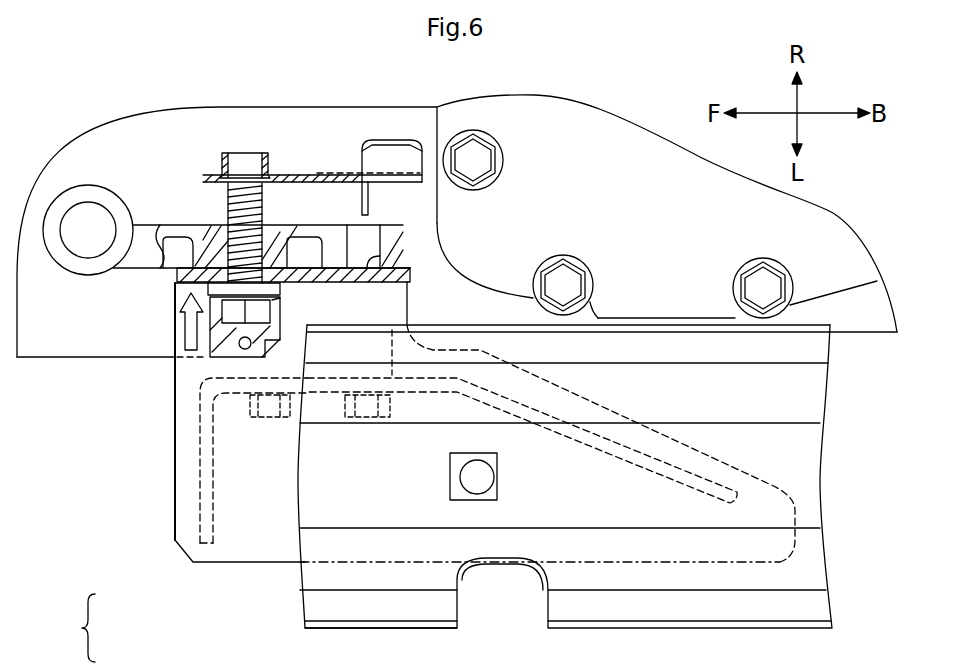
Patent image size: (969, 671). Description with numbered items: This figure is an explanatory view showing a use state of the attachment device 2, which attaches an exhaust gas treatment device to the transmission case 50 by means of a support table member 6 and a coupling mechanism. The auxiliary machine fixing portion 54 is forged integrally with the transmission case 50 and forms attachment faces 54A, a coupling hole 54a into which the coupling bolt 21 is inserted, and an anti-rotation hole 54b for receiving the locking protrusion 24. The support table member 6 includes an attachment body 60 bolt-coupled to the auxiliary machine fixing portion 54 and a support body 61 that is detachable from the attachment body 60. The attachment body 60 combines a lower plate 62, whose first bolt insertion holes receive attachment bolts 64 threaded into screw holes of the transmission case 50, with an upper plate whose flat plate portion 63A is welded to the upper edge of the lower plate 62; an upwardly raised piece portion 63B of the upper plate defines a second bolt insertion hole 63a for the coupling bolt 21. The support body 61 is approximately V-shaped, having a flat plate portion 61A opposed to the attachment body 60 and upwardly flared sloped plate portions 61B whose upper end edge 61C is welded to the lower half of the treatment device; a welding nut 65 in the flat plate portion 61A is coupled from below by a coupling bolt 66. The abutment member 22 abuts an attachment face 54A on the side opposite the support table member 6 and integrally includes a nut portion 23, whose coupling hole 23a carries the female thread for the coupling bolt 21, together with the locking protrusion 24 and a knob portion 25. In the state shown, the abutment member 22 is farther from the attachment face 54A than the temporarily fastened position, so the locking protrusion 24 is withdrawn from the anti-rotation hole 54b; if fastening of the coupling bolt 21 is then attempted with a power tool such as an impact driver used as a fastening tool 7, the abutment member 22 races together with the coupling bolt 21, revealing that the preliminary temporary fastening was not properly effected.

The attachment device 2 is at (163, 344).
The support table member 6 is at (62, 628).
The fastening tool 7 is at (243, 359).
The coupling bolt 21 is at (232, 314).
The abutment member 22 is at (305, 176).
The nut portion 23 is at (222, 160).
The coupling hole 23a is at (238, 170).
The locking protrusion 24 is at (370, 209).
The knob portion 25 is at (390, 138).
The transmission case 50 is at (597, 122).
The auxiliary machine fixing portion 54 is at (133, 263).
The coupling hole 54a is at (248, 234).
The attachment face 54A is at (385, 226).
The anti-rotation hole 54b is at (406, 275).
The attachment body 60 is at (211, 563).
The support body 61 is at (303, 623).
The flat plate portion 61A is at (812, 466).
The upwardly flared sloped plate portions 61B is at (813, 391).
The upper end edge 61C is at (650, 324).
The lower plate 62 is at (565, 424).
The second bolt insertion hole 63a is at (282, 296).
The flat plate portion 63A is at (185, 458).
The raised piece portion 63B is at (411, 273).
The attachment bolts 64 is at (346, 420).
The welding nut 65 is at (452, 479).
The coupling bolt 66 is at (483, 483).